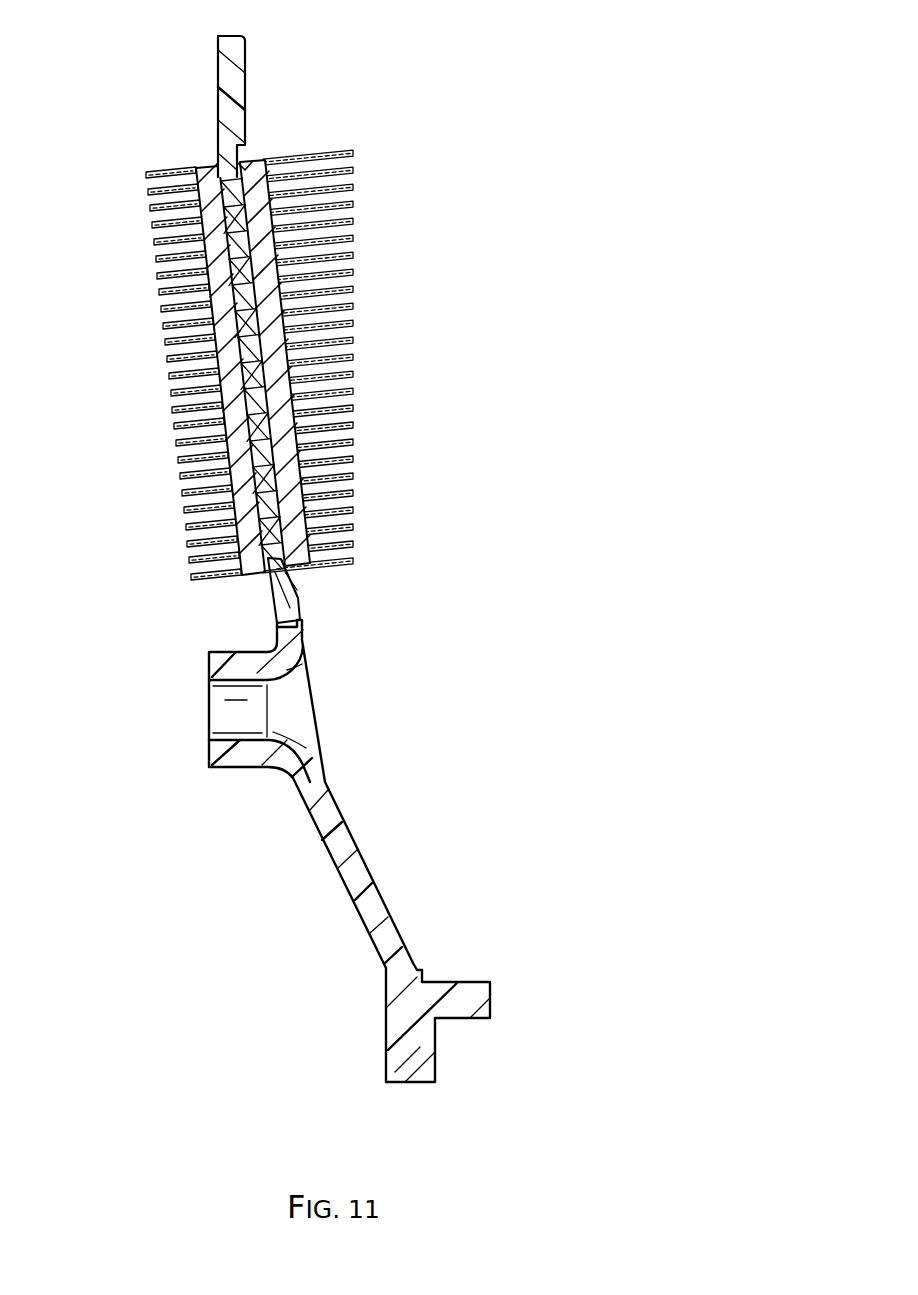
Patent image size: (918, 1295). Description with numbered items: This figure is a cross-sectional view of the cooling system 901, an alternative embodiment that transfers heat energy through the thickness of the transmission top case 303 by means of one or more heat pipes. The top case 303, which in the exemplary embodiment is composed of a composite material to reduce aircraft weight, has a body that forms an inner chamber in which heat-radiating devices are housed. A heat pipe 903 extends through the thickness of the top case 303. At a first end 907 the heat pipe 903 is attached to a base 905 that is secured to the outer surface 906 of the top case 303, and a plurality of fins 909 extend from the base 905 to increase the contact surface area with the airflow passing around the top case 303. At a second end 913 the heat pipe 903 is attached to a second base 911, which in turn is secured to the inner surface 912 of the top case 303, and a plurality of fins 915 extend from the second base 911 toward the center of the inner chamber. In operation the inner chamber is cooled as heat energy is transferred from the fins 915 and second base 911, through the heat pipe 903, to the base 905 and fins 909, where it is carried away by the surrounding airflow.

The cooling system 901 is at (319, 559).
The heat pipe 903 is at (218, 179).
The base 905 is at (268, 256).
The first end 907 is at (245, 163).
The fins 909 is at (355, 478).
The second base 911 is at (203, 285).
The second end 913 is at (215, 168).
The fins 915 is at (180, 393).
The outer surface 906 is at (298, 595).
The inner surface 912 is at (267, 593).
The transmission top case 303 is at (378, 892).